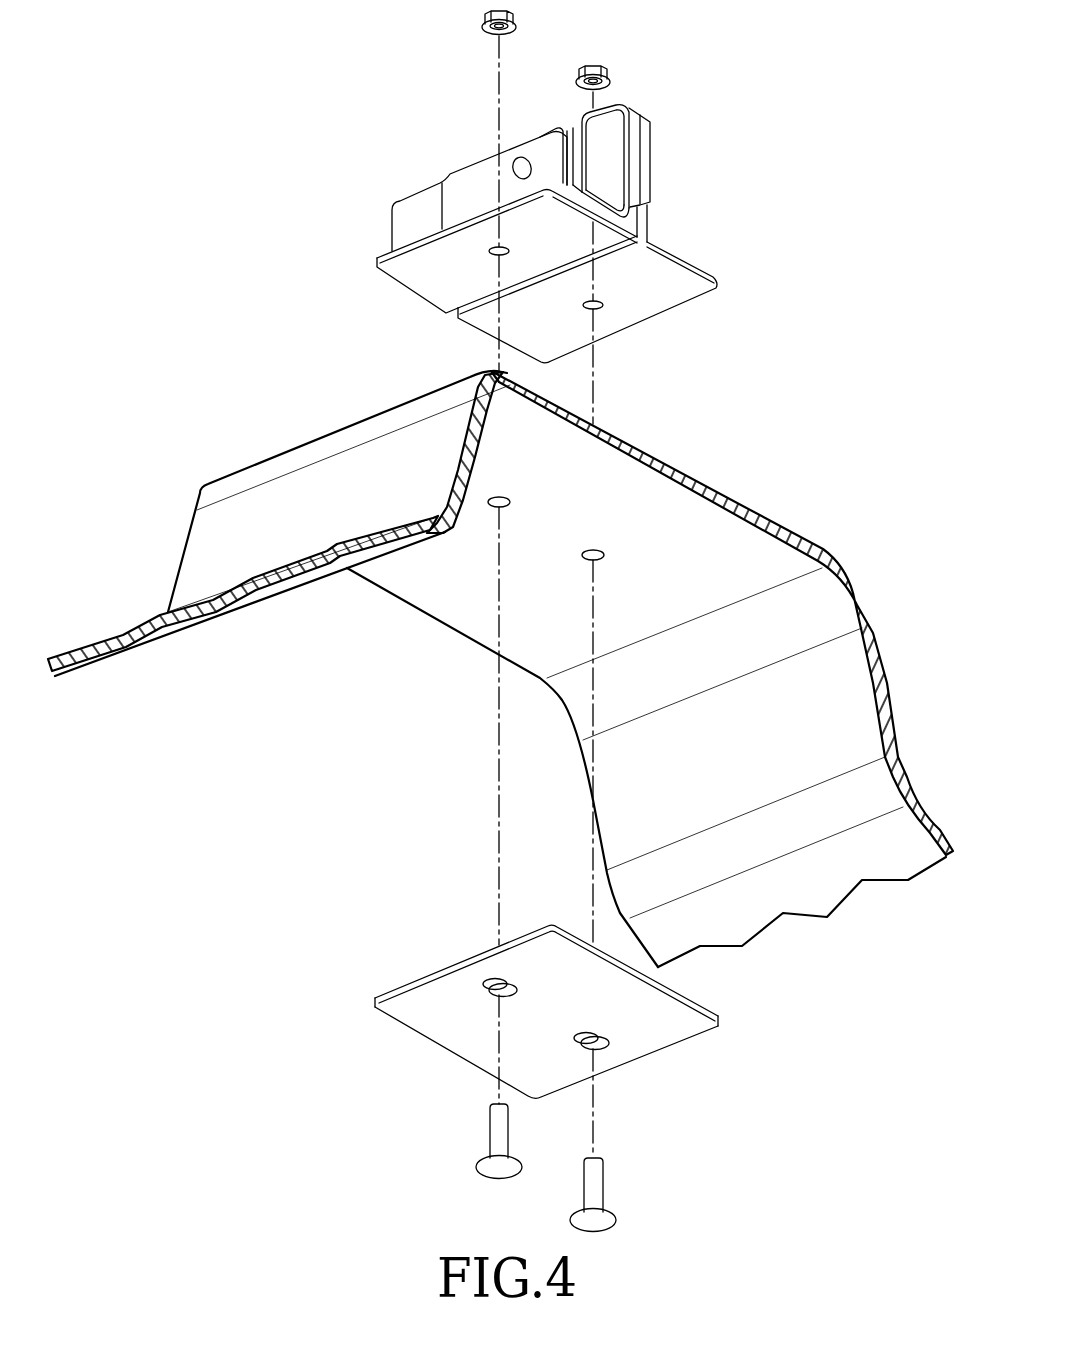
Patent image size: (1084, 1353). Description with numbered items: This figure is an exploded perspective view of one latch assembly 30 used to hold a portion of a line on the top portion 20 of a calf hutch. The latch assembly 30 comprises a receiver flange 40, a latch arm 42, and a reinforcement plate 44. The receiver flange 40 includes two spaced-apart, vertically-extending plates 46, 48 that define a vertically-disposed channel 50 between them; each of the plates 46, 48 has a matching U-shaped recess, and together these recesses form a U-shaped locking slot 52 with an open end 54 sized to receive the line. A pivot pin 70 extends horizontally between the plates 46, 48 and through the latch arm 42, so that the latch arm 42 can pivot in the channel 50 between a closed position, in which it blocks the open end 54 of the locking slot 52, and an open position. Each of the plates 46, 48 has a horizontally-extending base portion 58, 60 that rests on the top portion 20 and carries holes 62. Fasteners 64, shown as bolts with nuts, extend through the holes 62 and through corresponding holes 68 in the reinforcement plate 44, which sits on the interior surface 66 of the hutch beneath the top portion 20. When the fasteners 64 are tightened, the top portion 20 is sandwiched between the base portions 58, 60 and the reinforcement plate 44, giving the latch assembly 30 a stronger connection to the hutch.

The top portion 20 is at (738, 500).
The latch assembly 30 is at (693, 49).
The receiver flange 40 is at (631, 125).
The latch arm 42 is at (459, 172).
The reinforcement plate 44 is at (570, 1011).
The vertically-extending plate 46 is at (610, 167).
The vertically-extending plate 48 is at (640, 123).
The channel 50 is at (657, 226).
The locking slot 52 is at (556, 169).
The open end 54 is at (572, 120).
The base portion 58 is at (481, 271).
The base portion 60 is at (677, 293).
The holes 62 is at (497, 256).
The fasteners 64 is at (507, 1122).
The interior surface 66 is at (688, 567).
The holes 68 is at (498, 988).
The pivot pin 70 is at (515, 168).